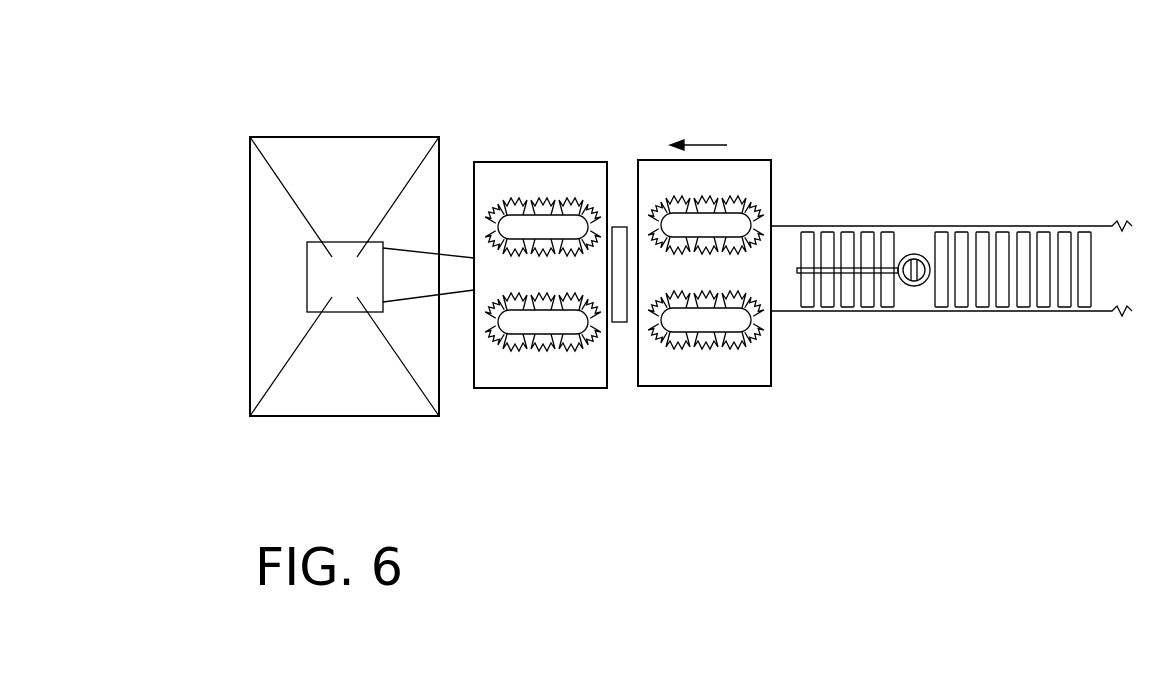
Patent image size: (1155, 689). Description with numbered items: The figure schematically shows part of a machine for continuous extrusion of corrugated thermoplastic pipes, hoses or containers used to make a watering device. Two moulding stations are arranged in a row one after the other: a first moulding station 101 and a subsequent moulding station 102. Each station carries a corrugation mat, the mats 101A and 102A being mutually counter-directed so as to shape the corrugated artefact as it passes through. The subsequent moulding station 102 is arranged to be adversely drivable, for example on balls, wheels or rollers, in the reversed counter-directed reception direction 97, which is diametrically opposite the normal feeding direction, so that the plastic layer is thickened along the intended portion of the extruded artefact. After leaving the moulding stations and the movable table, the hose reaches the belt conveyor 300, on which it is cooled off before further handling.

The reversed counter-directed reception direction 97 is at (718, 142).
The moulding station 101 is at (492, 158).
The corrugation mat 101A is at (542, 202).
The subsequent moulding station 102 is at (758, 390).
The corrugation mat 102A is at (678, 203).
The belt conveyor 300 is at (890, 307).